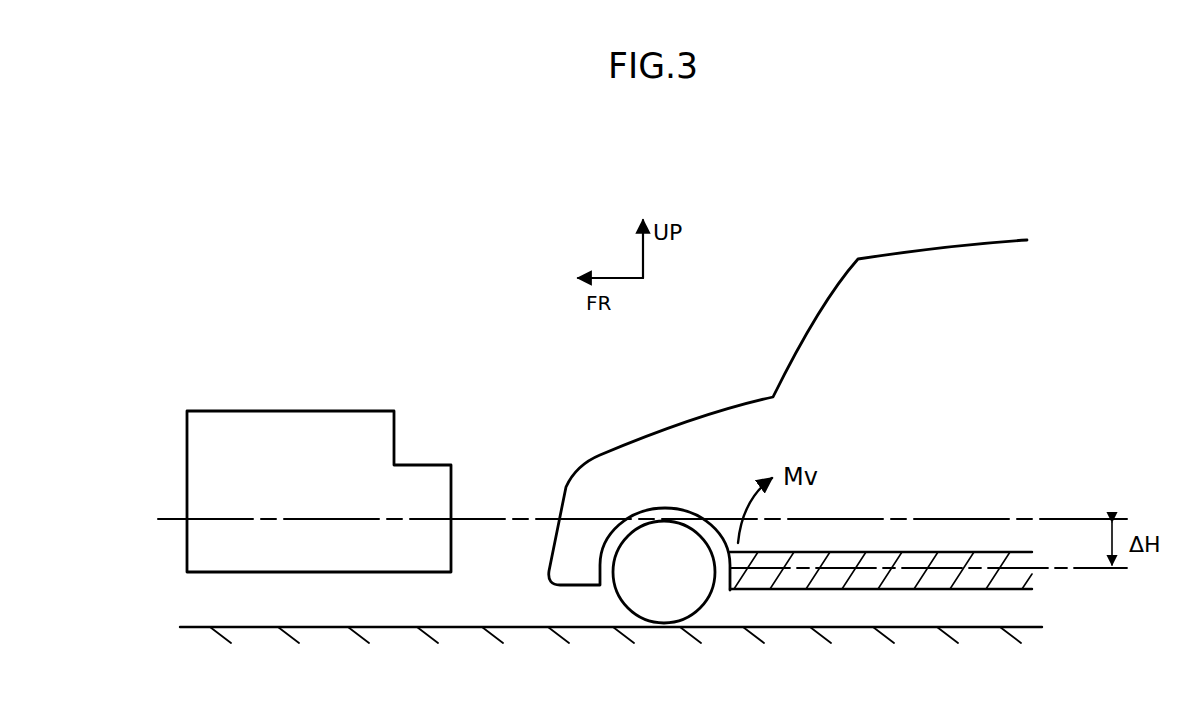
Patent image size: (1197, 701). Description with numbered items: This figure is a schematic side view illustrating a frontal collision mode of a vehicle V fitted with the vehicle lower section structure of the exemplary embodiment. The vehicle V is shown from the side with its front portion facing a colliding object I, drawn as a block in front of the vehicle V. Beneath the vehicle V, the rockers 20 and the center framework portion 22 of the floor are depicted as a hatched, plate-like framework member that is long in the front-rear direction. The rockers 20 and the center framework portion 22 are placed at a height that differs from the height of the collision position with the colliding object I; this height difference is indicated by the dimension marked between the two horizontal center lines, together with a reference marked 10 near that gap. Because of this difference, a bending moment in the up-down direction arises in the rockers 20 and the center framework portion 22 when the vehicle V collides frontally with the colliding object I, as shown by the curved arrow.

The gap / ground clearance reference 10 is at (881, 535).
The rockers 20 is at (928, 512).
The center framework portion 22 is at (955, 557).
The vehicle V is at (904, 234).
The colliding object I is at (422, 474).